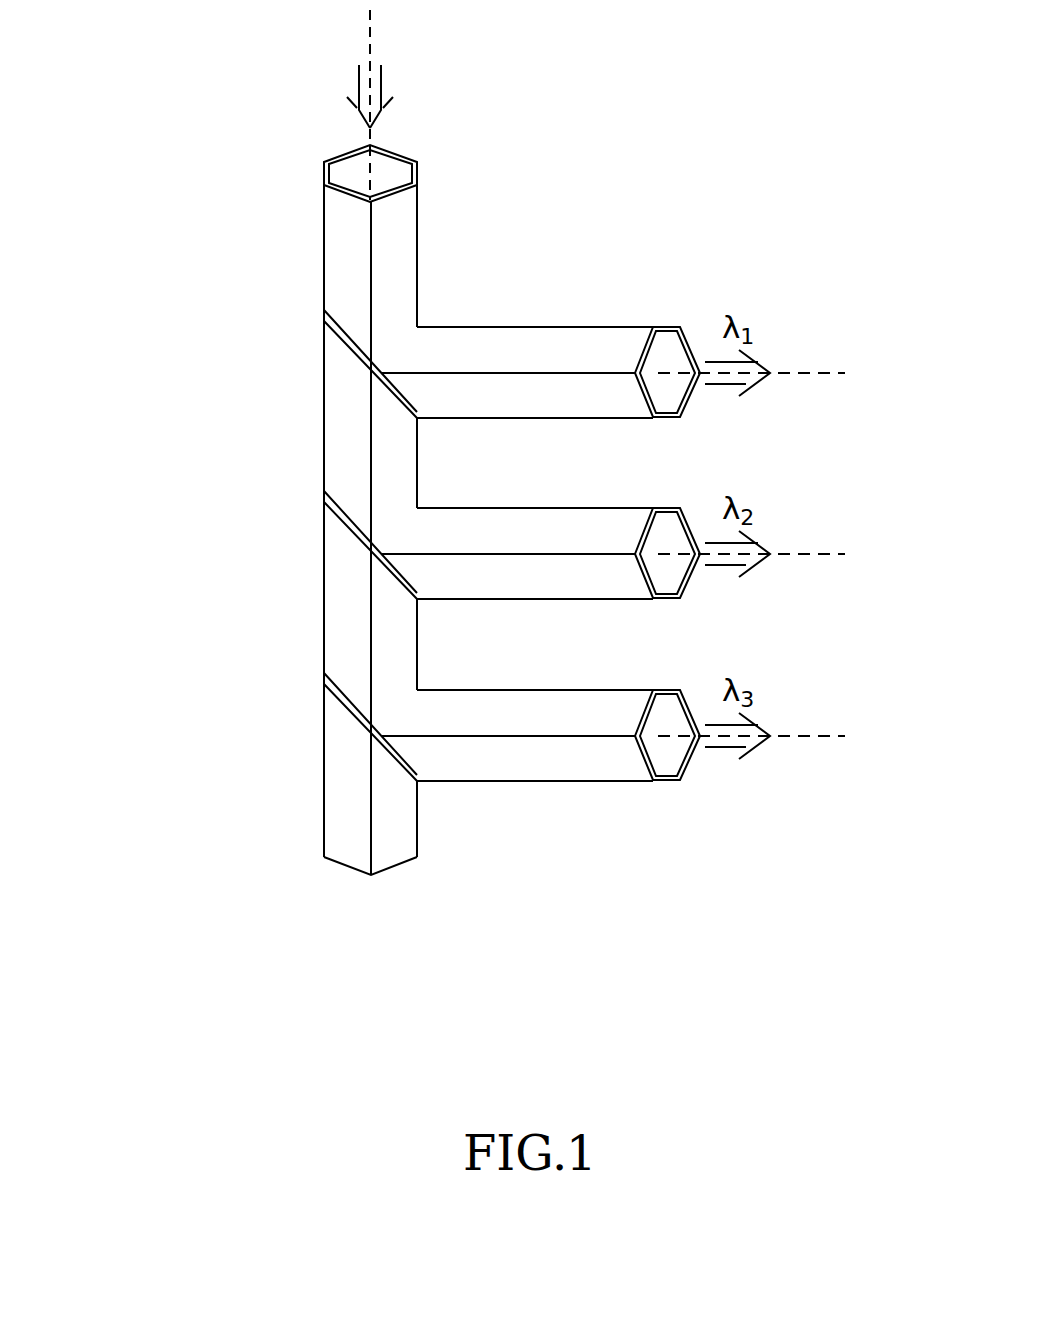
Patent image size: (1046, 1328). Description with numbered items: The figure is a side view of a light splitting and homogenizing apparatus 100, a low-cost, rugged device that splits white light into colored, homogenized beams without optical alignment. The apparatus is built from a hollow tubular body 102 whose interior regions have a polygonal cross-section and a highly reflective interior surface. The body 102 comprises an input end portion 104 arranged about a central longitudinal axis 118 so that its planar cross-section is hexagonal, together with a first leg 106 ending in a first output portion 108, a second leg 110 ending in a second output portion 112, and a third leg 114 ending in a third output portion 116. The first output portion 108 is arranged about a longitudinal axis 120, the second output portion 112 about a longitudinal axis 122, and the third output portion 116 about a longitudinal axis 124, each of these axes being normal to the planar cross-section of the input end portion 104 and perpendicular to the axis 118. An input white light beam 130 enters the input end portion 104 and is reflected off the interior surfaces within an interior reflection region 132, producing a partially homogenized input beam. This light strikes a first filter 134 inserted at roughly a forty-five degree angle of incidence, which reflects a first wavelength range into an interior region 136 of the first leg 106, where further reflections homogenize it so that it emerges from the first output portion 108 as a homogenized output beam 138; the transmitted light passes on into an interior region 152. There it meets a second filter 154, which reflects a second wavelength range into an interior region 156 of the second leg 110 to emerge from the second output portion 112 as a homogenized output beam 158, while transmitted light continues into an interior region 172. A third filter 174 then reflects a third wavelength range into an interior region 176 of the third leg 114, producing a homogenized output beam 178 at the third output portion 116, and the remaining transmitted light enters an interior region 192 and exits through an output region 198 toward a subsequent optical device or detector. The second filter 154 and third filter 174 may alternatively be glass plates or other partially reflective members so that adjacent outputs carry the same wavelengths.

The light splitting and homogenizing apparatus 100 is at (152, 889).
The body 102 is at (317, 572).
The input end portion 104 is at (410, 128).
The first leg 106 is at (516, 304).
The first output portion 108 is at (697, 322).
The second leg 110 is at (516, 485).
The second output portion 112 is at (697, 503).
The third leg 114 is at (516, 667).
The third output portion 116 is at (697, 685).
The longitudinal axis 118 is at (373, 32).
The longitudinal axis 120 is at (822, 373).
The longitudinal axis 122 is at (822, 554).
The longitudinal axis 124 is at (822, 736).
The input white light beam 130 is at (357, 88).
The interior reflection region 132 is at (340, 251).
The first filter 134 is at (338, 360).
The interior region 136 is at (453, 393).
The homogenized output beam 138 is at (722, 385).
The interior region 152 is at (342, 459).
The second filter 154 is at (340, 540).
The interior region 156 is at (453, 574).
The homogenized output beam 158 is at (722, 566).
The interior region 172 is at (343, 611).
The third filter 174 is at (338, 727).
The interior region 176 is at (482, 763).
The homogenized output beam 178 is at (722, 748).
The interior region 192 is at (343, 795).
The output region 198 is at (347, 870).